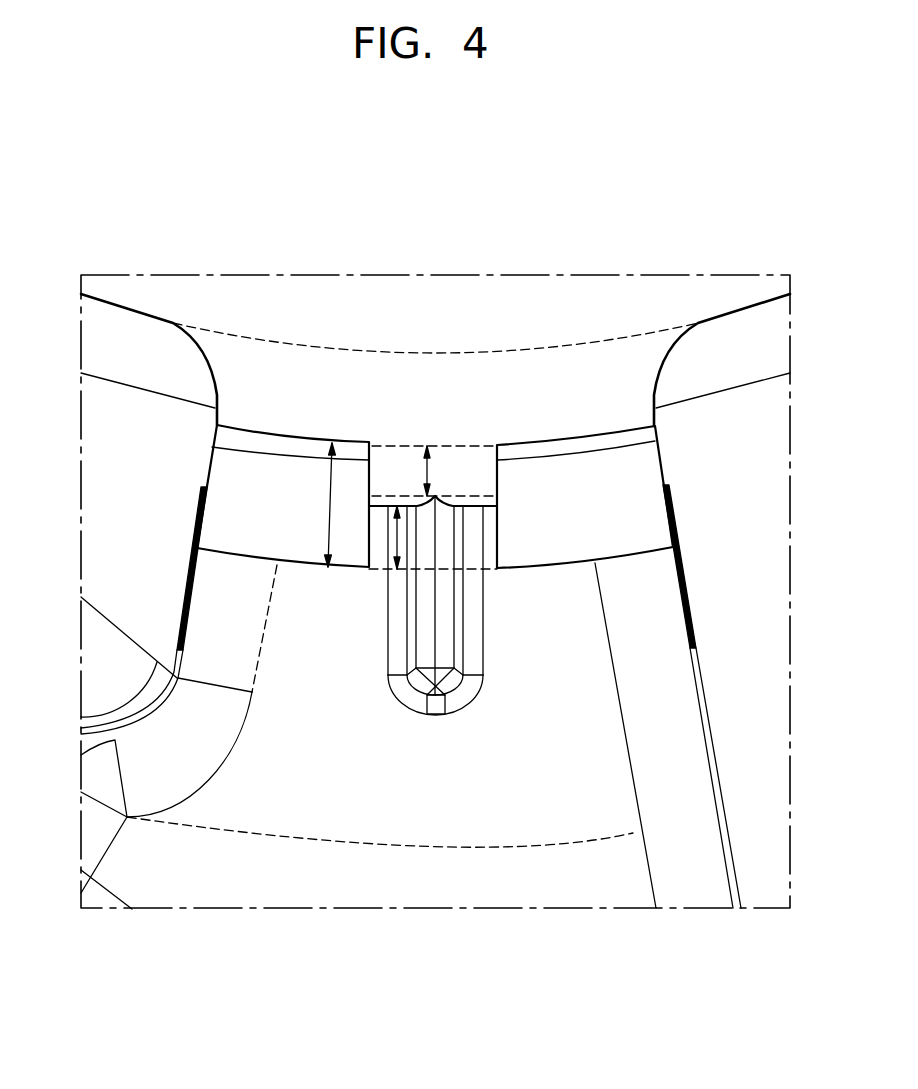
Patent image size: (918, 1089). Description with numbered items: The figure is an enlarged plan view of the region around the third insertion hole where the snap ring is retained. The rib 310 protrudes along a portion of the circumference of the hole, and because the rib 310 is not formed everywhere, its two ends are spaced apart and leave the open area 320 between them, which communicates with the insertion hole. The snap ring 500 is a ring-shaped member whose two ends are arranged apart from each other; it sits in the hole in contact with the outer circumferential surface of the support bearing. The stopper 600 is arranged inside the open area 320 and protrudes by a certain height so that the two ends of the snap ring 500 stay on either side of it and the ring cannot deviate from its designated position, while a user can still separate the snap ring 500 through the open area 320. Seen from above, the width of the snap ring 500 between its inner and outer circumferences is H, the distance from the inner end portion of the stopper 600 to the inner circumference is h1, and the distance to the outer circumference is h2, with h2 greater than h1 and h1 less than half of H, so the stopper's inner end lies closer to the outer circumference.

The rib 310 is at (128, 333).
The open area 320 is at (567, 395).
The snap ring 500 is at (284, 440).
The stopper 600 is at (443, 675).
The width of the snap ring H is at (331, 515).
The distance between stopper inner end portion and snap ring inner circumference h1 is at (428, 468).
The distance between stopper inner end portion and snap ring outer circumference h2 is at (397, 540).